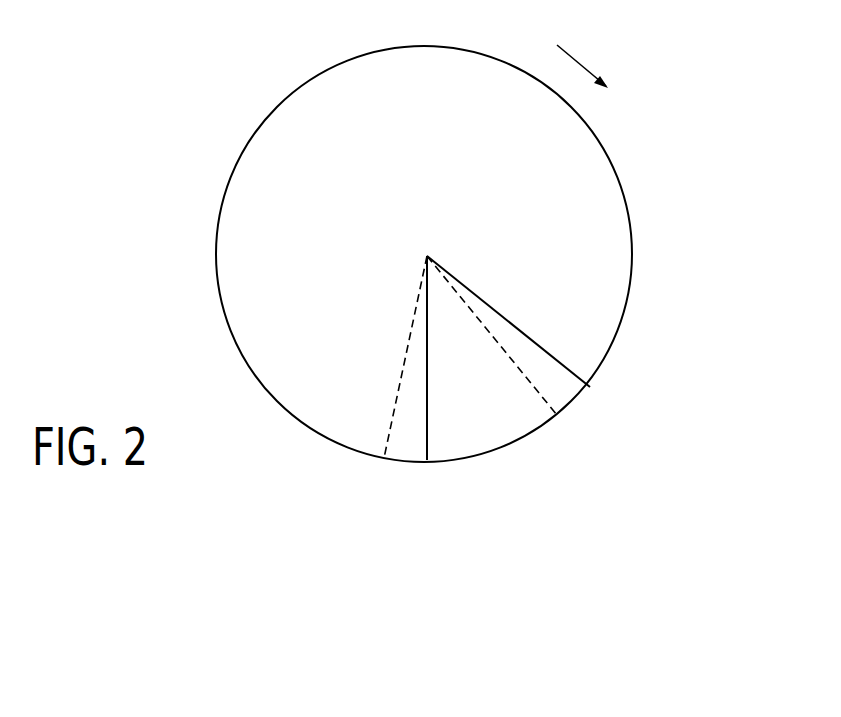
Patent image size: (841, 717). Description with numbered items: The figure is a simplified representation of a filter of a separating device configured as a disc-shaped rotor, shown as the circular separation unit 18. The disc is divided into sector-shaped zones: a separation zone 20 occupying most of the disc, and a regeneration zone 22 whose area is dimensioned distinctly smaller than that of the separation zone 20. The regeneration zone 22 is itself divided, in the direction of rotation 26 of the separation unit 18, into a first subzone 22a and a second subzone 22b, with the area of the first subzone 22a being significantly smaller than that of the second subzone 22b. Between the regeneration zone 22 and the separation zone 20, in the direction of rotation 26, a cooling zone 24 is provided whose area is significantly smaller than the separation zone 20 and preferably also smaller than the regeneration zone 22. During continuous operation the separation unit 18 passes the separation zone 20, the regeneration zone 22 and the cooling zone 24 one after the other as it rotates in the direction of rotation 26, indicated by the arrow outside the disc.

The separation unit 18 is at (298, 85).
The separation zone 20 is at (242, 220).
The regeneration zone 22 is at (605, 400).
The first subzone 22a is at (572, 392).
The second subzone 22b is at (490, 355).
The cooling zone 24 is at (398, 450).
The direction of rotation 26 is at (585, 60).